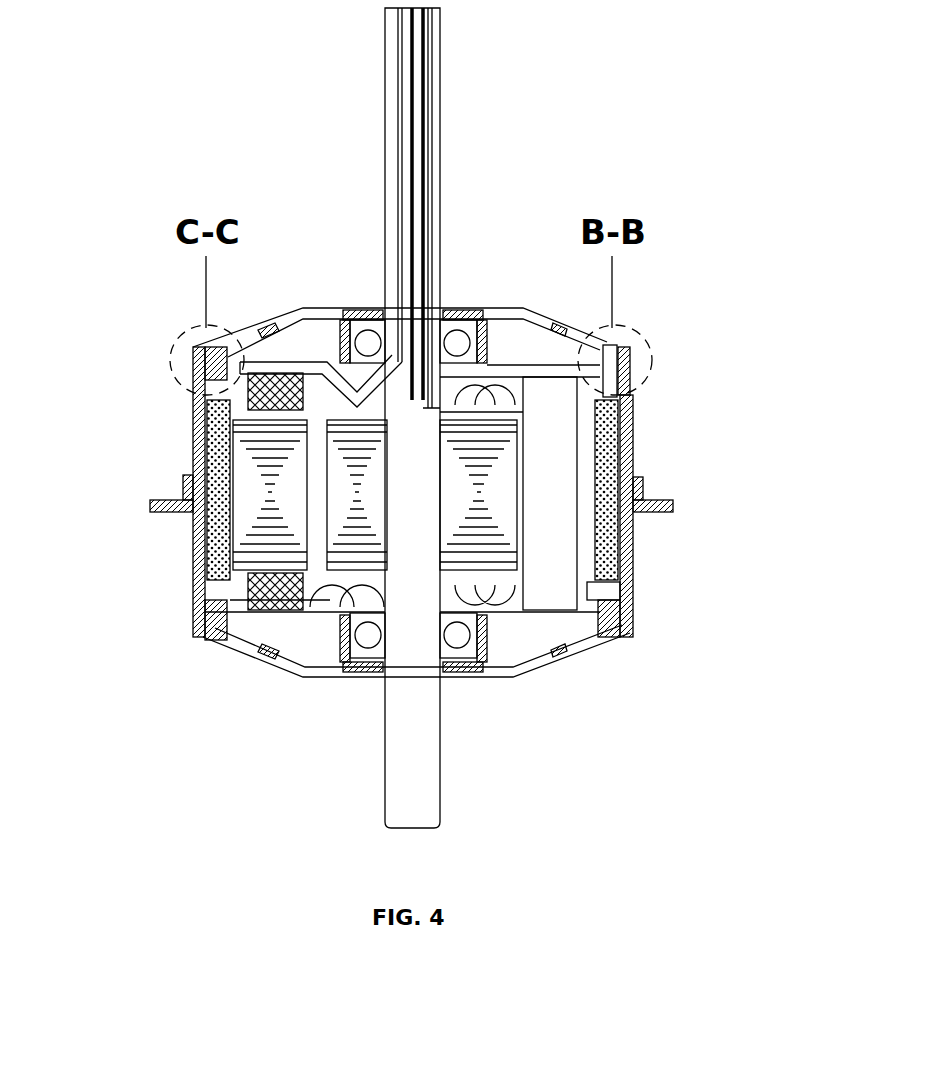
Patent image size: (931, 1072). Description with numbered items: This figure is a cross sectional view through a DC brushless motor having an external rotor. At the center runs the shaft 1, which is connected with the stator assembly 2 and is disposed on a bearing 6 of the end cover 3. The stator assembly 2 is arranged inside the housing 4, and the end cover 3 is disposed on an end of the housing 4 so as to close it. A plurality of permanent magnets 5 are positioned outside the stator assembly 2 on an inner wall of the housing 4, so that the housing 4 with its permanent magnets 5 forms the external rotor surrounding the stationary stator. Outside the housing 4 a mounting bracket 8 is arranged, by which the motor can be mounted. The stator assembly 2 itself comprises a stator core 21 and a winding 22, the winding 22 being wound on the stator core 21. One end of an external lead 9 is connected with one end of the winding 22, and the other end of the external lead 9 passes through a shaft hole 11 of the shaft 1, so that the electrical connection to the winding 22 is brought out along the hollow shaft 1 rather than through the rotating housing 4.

The shaft 1 is at (420, 675).
The stator assembly 2 is at (633, 625).
The end cover 3 is at (345, 310).
The housing 4 is at (195, 540).
The permanent magnets 5 is at (610, 518).
The bearing 6 is at (458, 333).
The mounting bracket 8 is at (173, 497).
The external lead 9 is at (410, 192).
The shaft hole 11 is at (424, 208).
The stator core 21 is at (478, 530).
The winding 22 is at (290, 567).